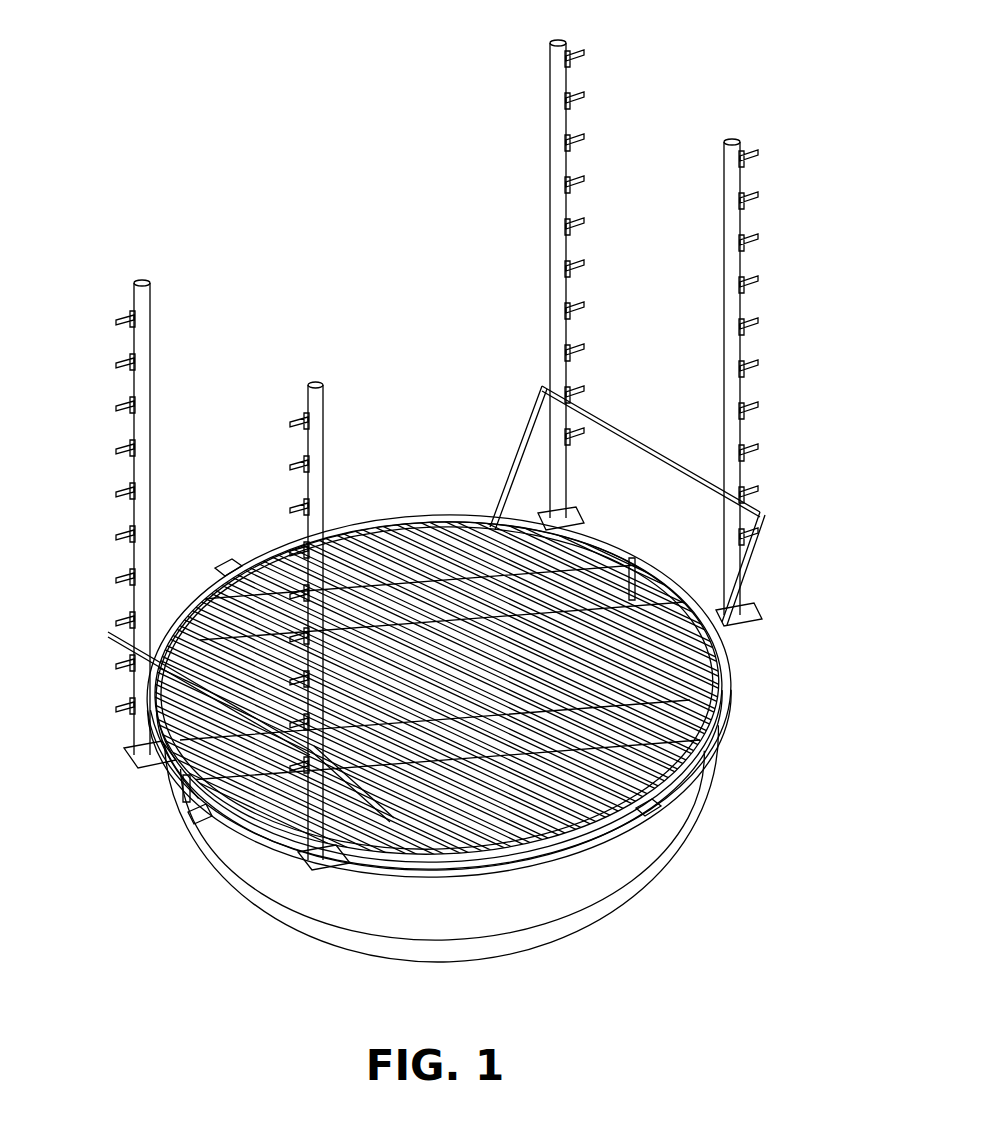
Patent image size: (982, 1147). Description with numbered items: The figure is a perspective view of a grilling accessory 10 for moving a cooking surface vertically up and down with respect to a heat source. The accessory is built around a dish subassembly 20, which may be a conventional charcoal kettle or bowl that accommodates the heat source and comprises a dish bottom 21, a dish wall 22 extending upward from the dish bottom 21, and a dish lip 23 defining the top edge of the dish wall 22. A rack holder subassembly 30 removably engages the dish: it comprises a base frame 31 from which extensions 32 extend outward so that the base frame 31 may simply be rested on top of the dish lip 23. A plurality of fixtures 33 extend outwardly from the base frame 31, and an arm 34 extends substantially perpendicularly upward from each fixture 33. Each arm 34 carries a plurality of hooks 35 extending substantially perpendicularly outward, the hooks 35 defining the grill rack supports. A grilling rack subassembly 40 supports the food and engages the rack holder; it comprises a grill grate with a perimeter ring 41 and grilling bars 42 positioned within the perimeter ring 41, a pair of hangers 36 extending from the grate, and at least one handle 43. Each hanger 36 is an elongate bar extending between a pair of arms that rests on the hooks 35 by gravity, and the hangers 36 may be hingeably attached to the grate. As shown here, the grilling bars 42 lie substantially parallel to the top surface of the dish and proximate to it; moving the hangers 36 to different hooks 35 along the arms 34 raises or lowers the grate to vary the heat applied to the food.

The grilling accessory 10 is at (181, 150).
The dish subassembly 20 is at (430, 860).
The dish bottom 21 is at (616, 972).
The dish wall 22 is at (195, 862).
The dish lip 23 is at (633, 896).
The rack holder subassembly 30 is at (435, 504).
The base frame 31 is at (736, 714).
The extensions 32 is at (224, 560).
The fixtures 33 is at (135, 770).
The arms 34 is at (155, 283).
The hooks 35 is at (122, 316).
The hangers 36 is at (106, 630).
The grilling rack subassembly 40 is at (412, 512).
The perimeter ring 41 is at (193, 822).
The grilling bars 42 is at (255, 835).
The handle 43 is at (185, 786).